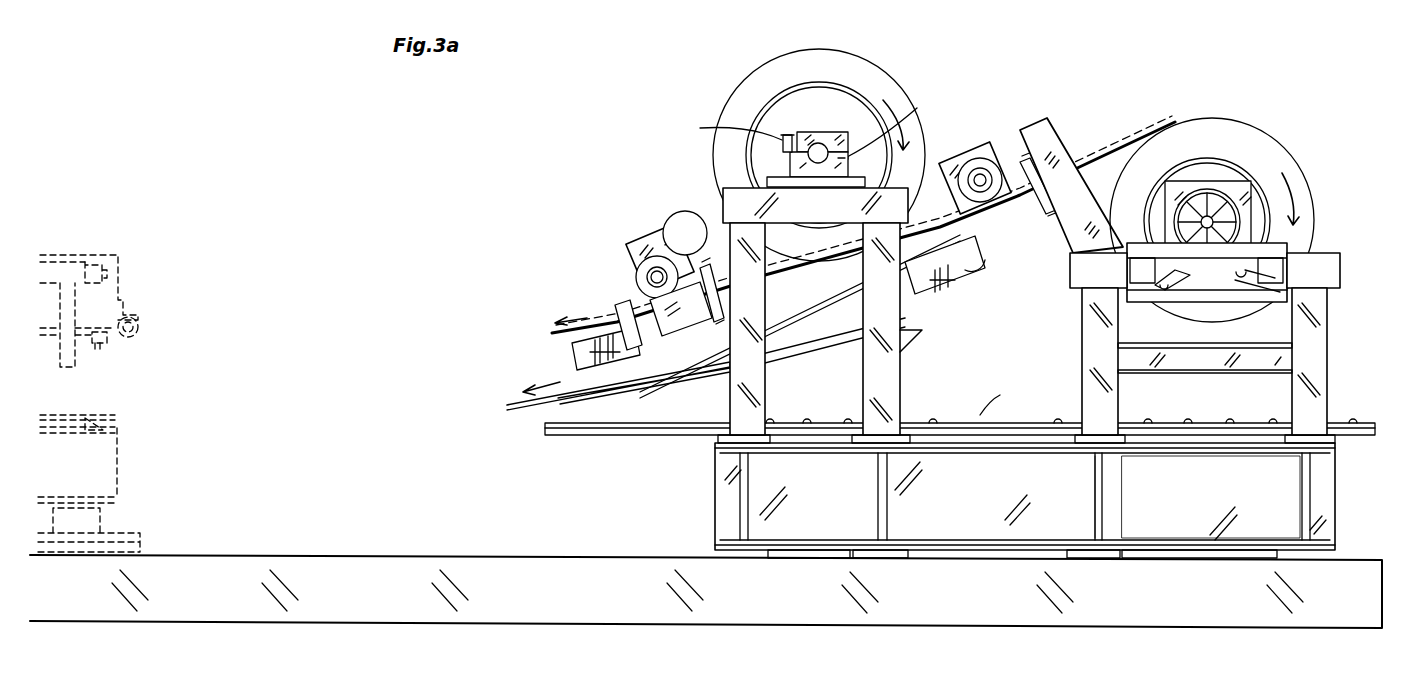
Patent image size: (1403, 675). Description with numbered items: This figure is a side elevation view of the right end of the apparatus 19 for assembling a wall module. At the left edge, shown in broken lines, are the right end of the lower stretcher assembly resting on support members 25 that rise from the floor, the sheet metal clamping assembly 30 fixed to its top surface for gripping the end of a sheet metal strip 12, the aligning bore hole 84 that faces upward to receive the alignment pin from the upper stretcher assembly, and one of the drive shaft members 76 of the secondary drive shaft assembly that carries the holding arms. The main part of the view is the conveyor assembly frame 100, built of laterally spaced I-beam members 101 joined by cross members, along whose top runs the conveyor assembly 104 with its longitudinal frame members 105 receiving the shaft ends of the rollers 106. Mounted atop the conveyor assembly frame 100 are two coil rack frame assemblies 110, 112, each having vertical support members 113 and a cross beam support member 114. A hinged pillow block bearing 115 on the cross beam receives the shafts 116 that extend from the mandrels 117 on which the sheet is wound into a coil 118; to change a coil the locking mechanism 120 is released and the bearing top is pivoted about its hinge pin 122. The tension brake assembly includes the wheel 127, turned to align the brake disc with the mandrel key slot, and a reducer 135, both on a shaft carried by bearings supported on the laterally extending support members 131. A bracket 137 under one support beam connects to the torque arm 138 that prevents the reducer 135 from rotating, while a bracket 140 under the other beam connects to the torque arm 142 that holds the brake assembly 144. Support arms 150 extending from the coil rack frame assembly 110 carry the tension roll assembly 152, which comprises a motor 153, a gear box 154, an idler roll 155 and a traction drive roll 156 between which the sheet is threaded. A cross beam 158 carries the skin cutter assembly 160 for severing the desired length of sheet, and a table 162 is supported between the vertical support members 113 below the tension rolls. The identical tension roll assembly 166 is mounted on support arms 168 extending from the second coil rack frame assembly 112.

The sheet metal strip 12 is at (1121, 132).
The apparatus 19 is at (93, 235).
The support members 25 is at (98, 522).
The sheet metal clamping assembly 30 is at (83, 411).
The drive shaft members 76 is at (62, 262).
The aligning bore hole 84 is at (100, 427).
The conveyor assembly frame 100 is at (673, 502).
The I-beam members 101 is at (986, 514).
The conveyor assembly 104 is at (1167, 447).
The frame members 105 is at (548, 435).
The rollers 106 is at (980, 415).
The coil rack frame assembly 110 is at (920, 374).
The coil rack frame assembly 112 is at (1102, 435).
The vertical support members 113 is at (765, 398).
The cross beam support member 114 is at (832, 218).
The hinged pillow block bearing 115 is at (850, 129).
The shafts 116 is at (822, 150).
The mandrels 117 is at (797, 112).
The coil 118 is at (793, 62).
The locking mechanism 120 is at (700, 128).
The hinge pin 122 is at (899, 121).
The wheel 127 is at (1212, 200).
The laterally extending support members 131 is at (1302, 218).
The reducer 135 is at (1237, 192).
The bracket 137 is at (1125, 315).
The torque arm 138 is at (1150, 310).
The bracket 140 is at (1275, 300).
The torque arm 142 is at (1240, 305).
The brake assembly 144 is at (1205, 305).
The support arms 150 is at (755, 243).
The tension roll assembly 152 is at (623, 284).
The motor 153 is at (680, 212).
The gear box 154 is at (668, 200).
The idler roll 155 is at (650, 277).
The traction drive roll 156 is at (740, 320).
The cross beam 158 is at (640, 360).
The skin cutter assembly 160 is at (545, 372).
The table 162 is at (710, 385).
The tension roll assembly 166 is at (991, 124).
The support arms 168 is at (1040, 118).